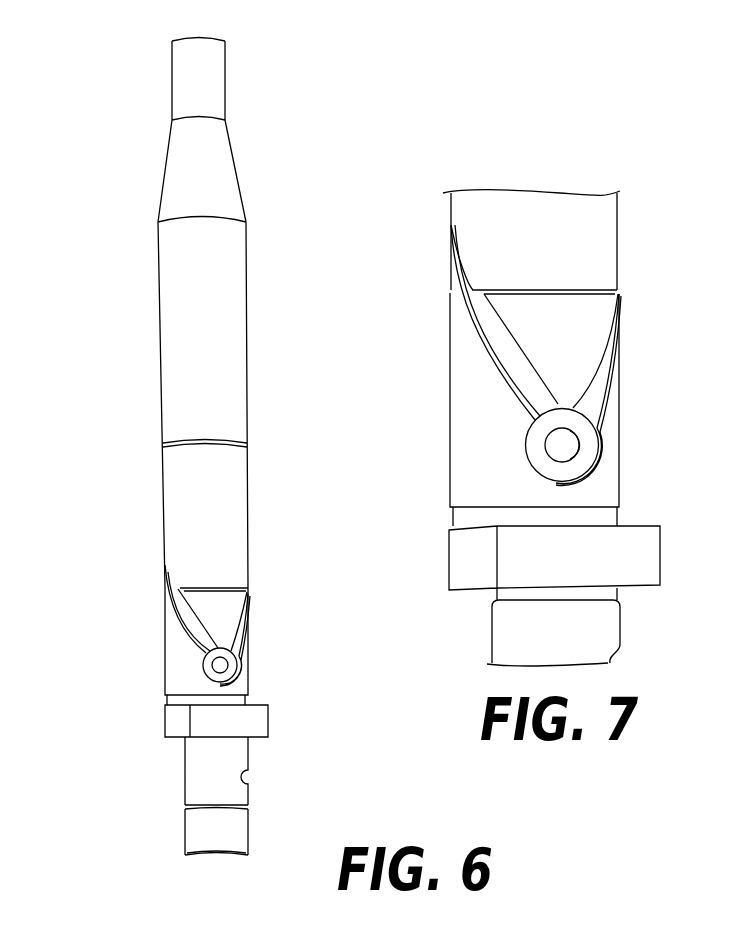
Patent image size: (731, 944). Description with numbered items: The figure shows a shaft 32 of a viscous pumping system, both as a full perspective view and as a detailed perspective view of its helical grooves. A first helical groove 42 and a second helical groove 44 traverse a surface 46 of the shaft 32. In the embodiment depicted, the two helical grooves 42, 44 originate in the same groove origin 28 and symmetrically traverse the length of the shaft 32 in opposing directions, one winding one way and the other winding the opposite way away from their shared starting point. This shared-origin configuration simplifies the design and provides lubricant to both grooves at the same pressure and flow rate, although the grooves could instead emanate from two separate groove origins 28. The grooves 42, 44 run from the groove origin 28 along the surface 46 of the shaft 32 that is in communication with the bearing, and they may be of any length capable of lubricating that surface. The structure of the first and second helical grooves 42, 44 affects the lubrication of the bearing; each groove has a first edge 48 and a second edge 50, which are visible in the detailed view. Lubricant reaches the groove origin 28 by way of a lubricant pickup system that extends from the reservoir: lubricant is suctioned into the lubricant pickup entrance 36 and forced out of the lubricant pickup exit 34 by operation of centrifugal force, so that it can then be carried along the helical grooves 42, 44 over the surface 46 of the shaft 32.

In FIG. 6, the groove origin 28 is at (203, 658).
In FIG. 7, the groove origin 28 is at (599, 424).
In FIG. 6, the shaft 32 is at (176, 411).
In FIG. 7, the shaft 32 is at (466, 436).
In FIG. 6, the lubricant pickup exit 34 is at (226, 664).
In FIG. 7, the lubricant pickup exit 34 is at (566, 447).
In FIG. 6, the lubricant pickup entrance 36 is at (222, 848).
In FIG. 6, the first helical groove 42 is at (246, 632).
In FIG. 7, the first helical groove 42 is at (595, 380).
In FIG. 6, the second helical groove 44 is at (190, 615).
In FIG. 7, the second helical groove 44 is at (485, 328).
In FIG. 6, the surface 46 is at (228, 472).
In FIG. 7, the surface 46 is at (593, 260).
In FIG. 6, the first edge 48 is at (187, 609).
In FIG. 7, the first edge 48 is at (485, 364).
In FIG. 6, the second edge 50 is at (235, 640).
In FIG. 7, the second edge 50 is at (488, 297).